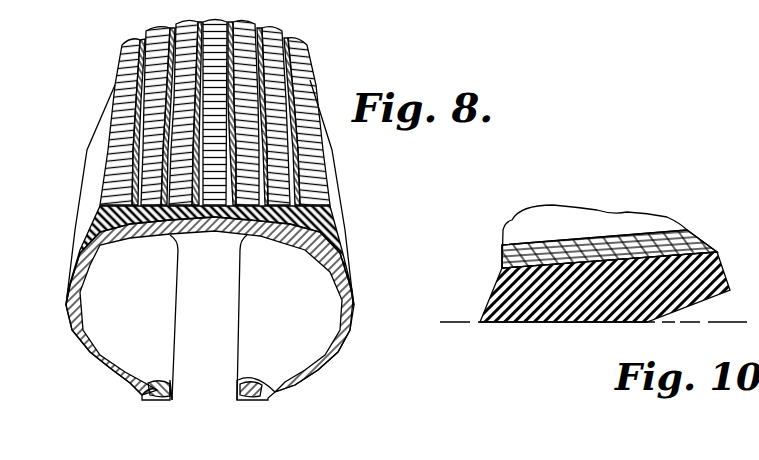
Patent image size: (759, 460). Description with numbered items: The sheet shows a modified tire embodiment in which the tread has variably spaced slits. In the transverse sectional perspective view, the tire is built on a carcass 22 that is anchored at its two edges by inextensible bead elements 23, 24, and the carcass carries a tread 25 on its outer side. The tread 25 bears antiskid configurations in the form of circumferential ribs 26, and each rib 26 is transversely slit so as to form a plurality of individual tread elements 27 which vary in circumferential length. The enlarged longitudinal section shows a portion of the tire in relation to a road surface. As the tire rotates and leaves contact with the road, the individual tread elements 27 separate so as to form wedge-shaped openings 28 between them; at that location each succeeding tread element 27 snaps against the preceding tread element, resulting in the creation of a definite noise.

In FIG. 8, the carcass 22 is at (75, 318).
In FIG. 8, the inextensible bead element 23 is at (147, 390).
In FIG. 8, the inextensible bead element 24 is at (270, 395).
In FIG. 8, the tread 25 is at (107, 226).
In FIG. 8, the circumferential rib 26 is at (330, 210).
In FIG. 8, the individual tread element 27 is at (118, 127).
In FIG. 10, the individual tread element 27 is at (652, 322).
In FIG. 10, the wedge-shaped opening 28 is at (637, 290).